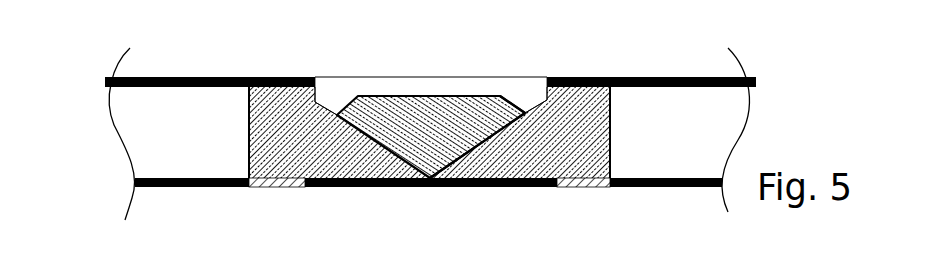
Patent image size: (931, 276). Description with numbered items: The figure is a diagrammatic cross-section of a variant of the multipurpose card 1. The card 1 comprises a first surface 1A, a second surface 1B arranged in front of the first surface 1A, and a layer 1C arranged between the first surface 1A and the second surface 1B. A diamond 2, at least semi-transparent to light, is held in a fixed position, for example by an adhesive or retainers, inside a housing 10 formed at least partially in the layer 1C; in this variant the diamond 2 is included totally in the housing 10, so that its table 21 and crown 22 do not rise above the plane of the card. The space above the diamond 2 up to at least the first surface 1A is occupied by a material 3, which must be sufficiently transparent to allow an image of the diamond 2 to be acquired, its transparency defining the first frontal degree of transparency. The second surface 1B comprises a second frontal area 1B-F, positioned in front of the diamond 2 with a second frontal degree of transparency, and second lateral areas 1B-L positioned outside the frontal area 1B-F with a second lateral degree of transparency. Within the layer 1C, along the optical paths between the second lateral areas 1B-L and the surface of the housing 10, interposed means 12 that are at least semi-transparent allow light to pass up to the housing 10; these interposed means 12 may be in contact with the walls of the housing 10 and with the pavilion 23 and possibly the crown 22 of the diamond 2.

The multipurpose card 1 is at (90, 61).
The first surface 1A is at (665, 73).
The second surface 1B is at (216, 189).
The second lateral area 1B-L is at (270, 188).
The second frontal area 1B-F is at (397, 188).
The layer 1C is at (708, 138).
The interposed means 12 is at (263, 132).
The housing 10 is at (543, 98).
The material 3 is at (344, 77).
The diamond 2 is at (431, 125).
The table 21 is at (417, 95).
The crown 22 is at (511, 103).
The pavilion 23 is at (468, 155).